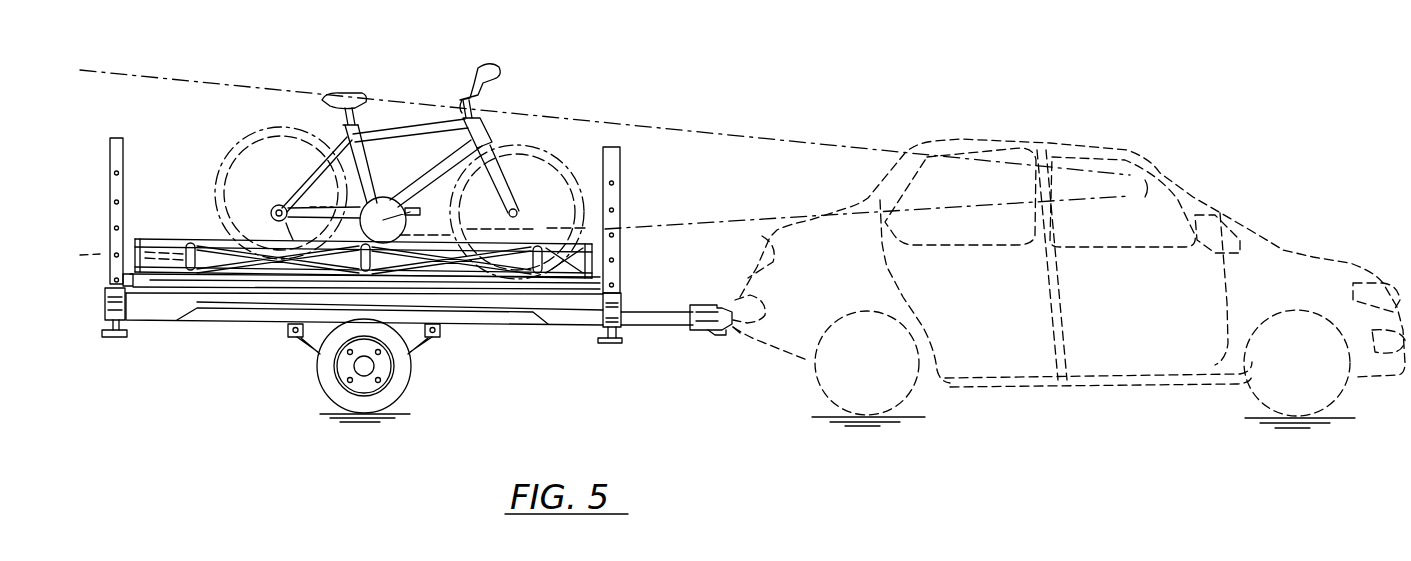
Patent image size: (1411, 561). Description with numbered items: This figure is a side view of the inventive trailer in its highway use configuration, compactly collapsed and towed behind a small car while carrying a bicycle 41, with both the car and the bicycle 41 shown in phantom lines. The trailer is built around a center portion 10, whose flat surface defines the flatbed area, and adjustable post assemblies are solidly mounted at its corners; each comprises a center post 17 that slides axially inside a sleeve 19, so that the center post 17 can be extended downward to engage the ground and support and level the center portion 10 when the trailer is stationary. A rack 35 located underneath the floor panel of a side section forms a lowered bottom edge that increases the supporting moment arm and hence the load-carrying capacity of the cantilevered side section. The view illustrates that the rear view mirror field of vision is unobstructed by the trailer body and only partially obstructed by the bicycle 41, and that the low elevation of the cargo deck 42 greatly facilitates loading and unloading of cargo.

The center portion 10 is at (243, 298).
The center post 17 is at (123, 152).
The sleeve 19 is at (623, 327).
The rack 35 is at (150, 240).
The bicycle 41 is at (393, 131).
The cargo deck 42 is at (203, 260).